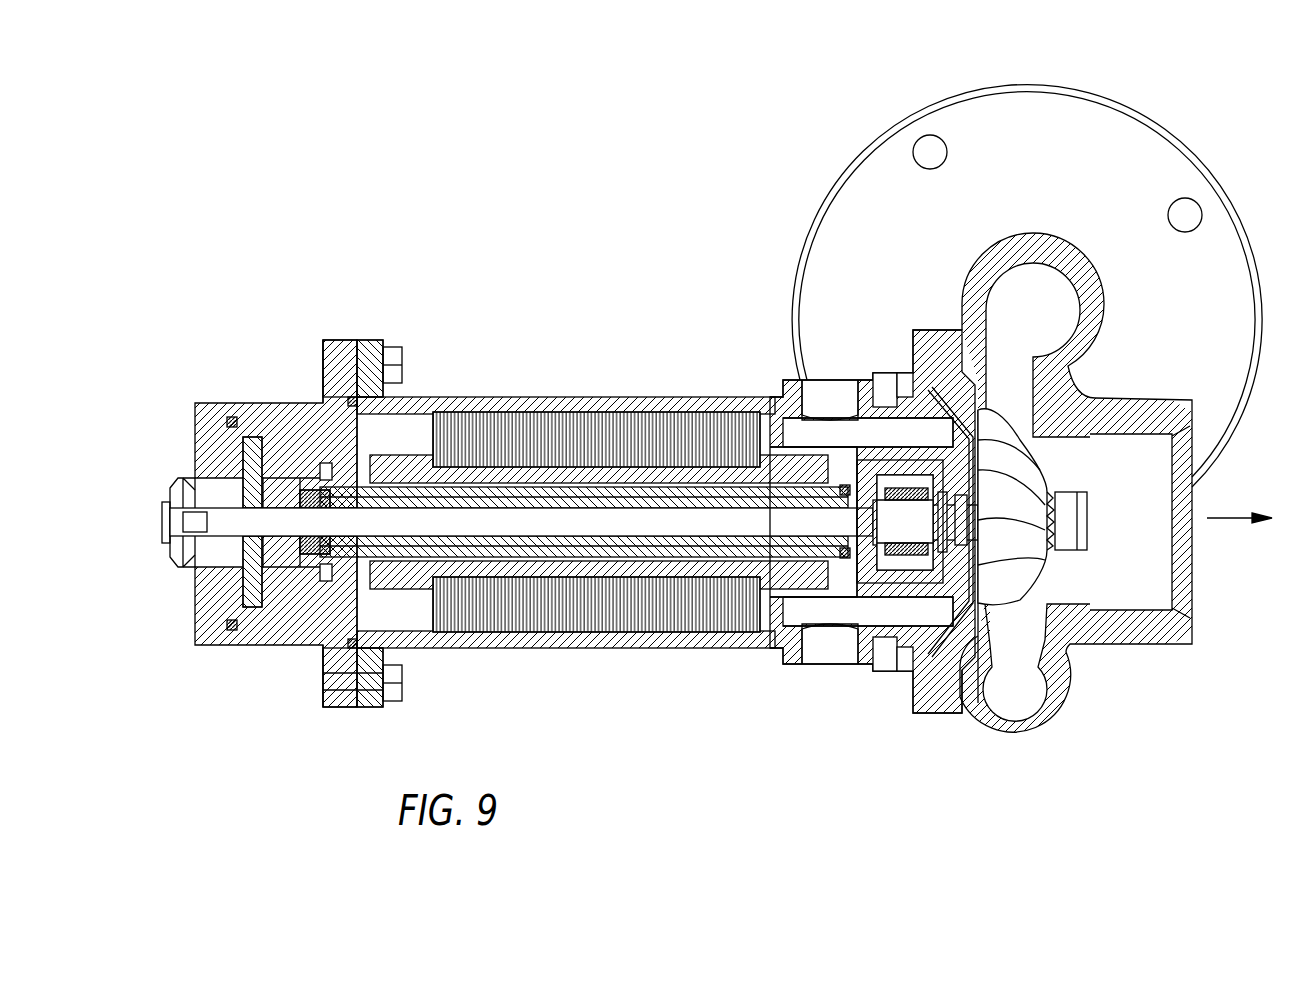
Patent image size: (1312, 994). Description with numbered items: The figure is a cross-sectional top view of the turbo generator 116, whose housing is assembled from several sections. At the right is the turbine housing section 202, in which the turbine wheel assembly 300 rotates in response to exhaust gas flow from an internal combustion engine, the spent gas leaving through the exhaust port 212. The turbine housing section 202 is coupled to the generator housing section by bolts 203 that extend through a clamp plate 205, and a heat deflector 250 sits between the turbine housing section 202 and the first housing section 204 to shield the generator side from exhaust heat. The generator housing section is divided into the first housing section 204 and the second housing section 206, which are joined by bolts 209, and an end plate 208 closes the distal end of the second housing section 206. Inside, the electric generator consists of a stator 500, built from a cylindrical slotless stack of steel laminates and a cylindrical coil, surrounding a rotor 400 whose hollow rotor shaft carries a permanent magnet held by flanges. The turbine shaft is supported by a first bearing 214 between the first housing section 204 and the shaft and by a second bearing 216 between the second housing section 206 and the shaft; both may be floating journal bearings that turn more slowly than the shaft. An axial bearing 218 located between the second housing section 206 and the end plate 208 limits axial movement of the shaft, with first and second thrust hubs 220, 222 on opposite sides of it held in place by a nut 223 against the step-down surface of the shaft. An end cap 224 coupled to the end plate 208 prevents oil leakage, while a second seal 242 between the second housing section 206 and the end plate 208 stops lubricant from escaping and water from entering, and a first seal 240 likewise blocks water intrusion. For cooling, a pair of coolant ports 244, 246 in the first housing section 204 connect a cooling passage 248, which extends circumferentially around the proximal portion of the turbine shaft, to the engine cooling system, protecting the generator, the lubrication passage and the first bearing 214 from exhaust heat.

The turbo generator 116 is at (683, 150).
The turbine housing section 202 is at (1055, 725).
The bolts 203 is at (887, 653).
The first housing section 204 is at (555, 655).
The clamp plate 205 is at (907, 668).
The second housing section 206 is at (322, 395).
The end plate 208 is at (192, 413).
The bolts 209 is at (393, 708).
The exhaust port 212 is at (1230, 518).
The first bearing 214 is at (897, 485).
The second bearing 216 is at (307, 493).
The axial bearing 218 is at (263, 503).
The first thrust hub 220 is at (268, 487).
The second thrust hub 222 is at (228, 503).
The nut 223 is at (193, 548).
The end cap 224 is at (163, 512).
The first seal 240 is at (350, 645).
The second seal 242 is at (228, 630).
The coolant port 244 is at (843, 378).
The coolant port 246 is at (840, 667).
The cooling passage 248 is at (790, 418).
The heat deflector 250 is at (960, 652).
The turbine wheel assembly 300 is at (993, 607).
The rotor 400 is at (705, 490).
The stator 500 is at (587, 457).